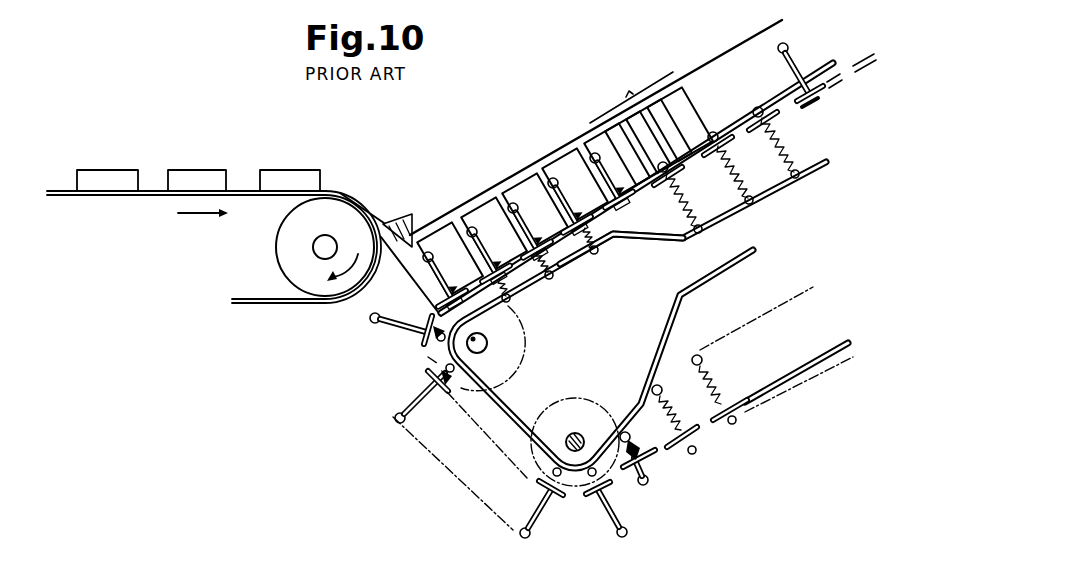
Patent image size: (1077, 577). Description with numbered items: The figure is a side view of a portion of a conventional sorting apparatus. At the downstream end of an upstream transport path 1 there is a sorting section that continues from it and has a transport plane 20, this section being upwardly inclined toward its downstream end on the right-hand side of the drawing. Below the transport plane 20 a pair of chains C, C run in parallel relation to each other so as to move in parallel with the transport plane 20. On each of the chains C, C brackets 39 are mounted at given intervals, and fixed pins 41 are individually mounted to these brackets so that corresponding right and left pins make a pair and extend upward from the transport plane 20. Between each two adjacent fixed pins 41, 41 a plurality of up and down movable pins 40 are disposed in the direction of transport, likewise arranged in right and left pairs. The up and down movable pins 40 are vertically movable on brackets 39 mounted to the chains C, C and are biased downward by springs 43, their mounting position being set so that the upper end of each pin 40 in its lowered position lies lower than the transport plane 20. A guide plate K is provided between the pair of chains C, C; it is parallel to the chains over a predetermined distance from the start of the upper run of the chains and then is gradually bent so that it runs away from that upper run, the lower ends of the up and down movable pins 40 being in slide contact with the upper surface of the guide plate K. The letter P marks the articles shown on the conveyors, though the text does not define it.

The upstream transport path 1 is at (233, 154).
The transport plane 20 is at (733, 102).
The brackets 39 is at (420, 379).
The up and down movable pins 40 is at (450, 214).
The fixed pins 41 is at (591, 153).
The springs 43 is at (533, 290).
The products P is at (631, 92).
The guide plate K is at (618, 243).
The chains C is at (488, 440).